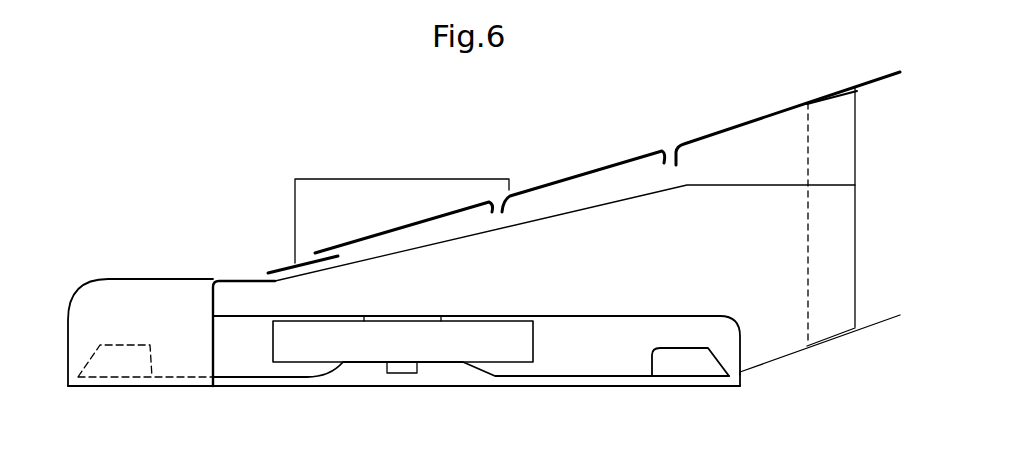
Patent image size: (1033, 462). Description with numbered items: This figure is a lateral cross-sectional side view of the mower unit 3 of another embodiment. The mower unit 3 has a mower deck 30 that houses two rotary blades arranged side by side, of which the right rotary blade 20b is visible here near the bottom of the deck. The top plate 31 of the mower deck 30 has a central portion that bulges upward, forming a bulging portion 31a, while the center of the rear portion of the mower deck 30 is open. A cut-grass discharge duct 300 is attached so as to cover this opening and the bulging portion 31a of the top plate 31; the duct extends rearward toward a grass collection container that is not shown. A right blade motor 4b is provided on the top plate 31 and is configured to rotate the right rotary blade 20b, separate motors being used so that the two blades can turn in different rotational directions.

The mower unit 3 is at (175, 98).
The mower deck 30 is at (108, 276).
The top plate 31 is at (190, 278).
The bulging portion 31a is at (772, 185).
The cut-grass discharge duct 300 is at (877, 80).
The right blade motor 4b is at (402, 179).
The right rotary blade 20b is at (683, 355).